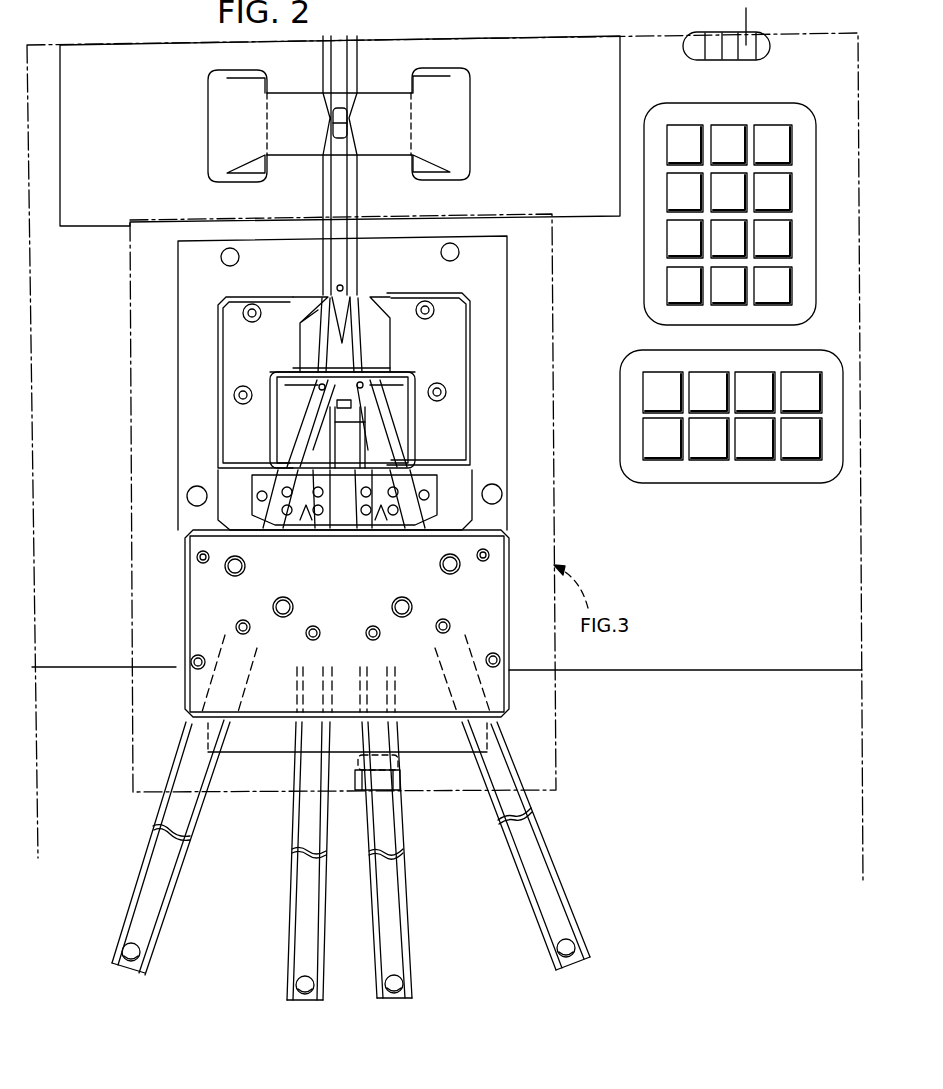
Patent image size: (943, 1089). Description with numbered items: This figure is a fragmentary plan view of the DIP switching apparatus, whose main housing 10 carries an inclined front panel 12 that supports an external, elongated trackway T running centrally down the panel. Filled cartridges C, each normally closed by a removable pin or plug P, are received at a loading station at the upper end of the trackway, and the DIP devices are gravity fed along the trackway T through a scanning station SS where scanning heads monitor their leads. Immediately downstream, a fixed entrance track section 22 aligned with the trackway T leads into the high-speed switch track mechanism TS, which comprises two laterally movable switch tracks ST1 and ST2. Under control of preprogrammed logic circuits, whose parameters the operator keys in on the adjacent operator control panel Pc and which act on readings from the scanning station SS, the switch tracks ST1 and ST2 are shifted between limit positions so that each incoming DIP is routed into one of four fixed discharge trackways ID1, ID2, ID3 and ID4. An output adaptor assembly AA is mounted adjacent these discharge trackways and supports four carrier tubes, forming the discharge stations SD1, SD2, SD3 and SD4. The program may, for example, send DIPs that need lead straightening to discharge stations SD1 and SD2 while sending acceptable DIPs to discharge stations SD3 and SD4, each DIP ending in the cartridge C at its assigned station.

The inclined front panel 12 is at (542, 62).
The main housing 10 is at (507, 281).
The fixed entrance track section 22 is at (338, 254).
The trackway T is at (343, 65).
The scanning station SS is at (447, 129).
The operator control panel Pc is at (732, 473).
The switch track mechanism TS is at (440, 362).
The upper movable switch track ST1 is at (365, 325).
The lower movable switch track ST2 is at (292, 410).
The first fixed discharge trackway ID1 is at (283, 522).
The second fixed discharge trackway ID2 is at (320, 525).
The third fixed discharge trackway ID3 is at (370, 525).
The fourth fixed discharge trackway ID4 is at (403, 525).
The output adaptor assembly AA is at (197, 594).
The first discharge station SD1 is at (168, 838).
The second discharge station SD2 is at (307, 831).
The third discharge station SD3 is at (393, 830).
The fourth discharge station SD4 is at (525, 805).
The cartridge C is at (165, 902).
The pin or plug P is at (145, 957).